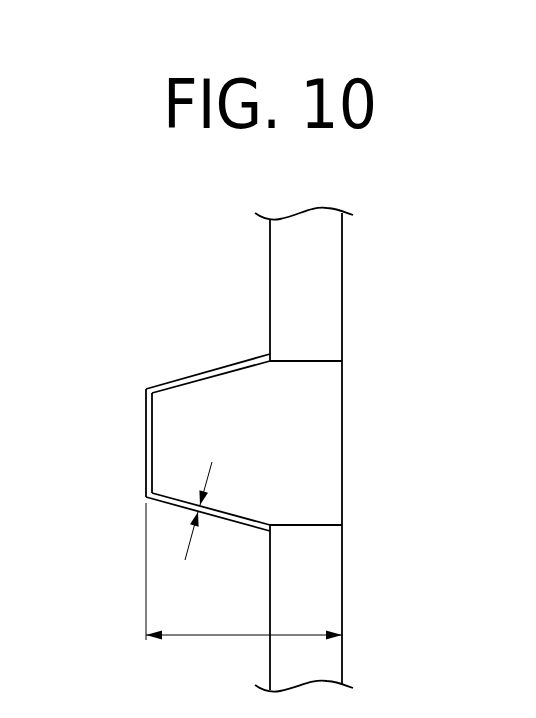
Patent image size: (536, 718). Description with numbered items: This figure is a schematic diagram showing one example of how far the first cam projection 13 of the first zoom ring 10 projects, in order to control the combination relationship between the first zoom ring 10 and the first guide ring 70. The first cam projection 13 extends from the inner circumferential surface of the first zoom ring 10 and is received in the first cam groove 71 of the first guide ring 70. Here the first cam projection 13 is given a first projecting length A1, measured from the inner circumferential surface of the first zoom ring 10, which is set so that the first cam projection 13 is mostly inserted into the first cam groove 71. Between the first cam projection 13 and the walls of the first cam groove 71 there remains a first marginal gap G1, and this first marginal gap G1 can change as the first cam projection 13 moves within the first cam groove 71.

The first zoom ring 10 is at (342, 286).
The first guide ring 70 is at (270, 296).
The first cam projection 13 is at (167, 417).
The first cam groove 71 is at (149, 438).
The first marginal gap G1 is at (204, 513).
The first projecting length A1 is at (244, 586).